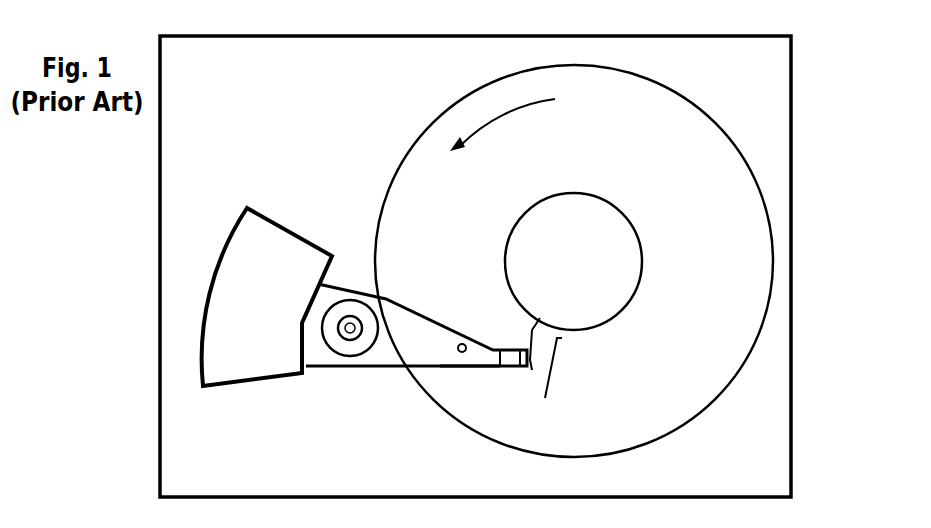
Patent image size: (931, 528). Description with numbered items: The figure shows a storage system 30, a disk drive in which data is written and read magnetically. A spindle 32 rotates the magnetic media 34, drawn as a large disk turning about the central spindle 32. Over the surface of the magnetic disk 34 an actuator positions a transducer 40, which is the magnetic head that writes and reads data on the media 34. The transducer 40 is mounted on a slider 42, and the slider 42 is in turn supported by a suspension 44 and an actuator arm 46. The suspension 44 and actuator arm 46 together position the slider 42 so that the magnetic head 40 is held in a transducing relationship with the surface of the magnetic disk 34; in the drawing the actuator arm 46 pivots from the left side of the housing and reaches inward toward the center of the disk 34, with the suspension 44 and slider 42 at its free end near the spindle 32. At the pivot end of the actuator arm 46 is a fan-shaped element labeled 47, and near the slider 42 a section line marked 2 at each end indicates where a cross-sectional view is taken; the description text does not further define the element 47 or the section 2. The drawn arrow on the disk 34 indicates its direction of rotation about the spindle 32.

The storage system 30 is at (803, 48).
The spindle 32 is at (597, 192).
The magnetic media 34 is at (703, 266).
The transducer 40 is at (532, 370).
The slider 42 is at (540, 318).
The suspension 44 is at (481, 367).
The actuator arm 46 is at (395, 301).
The voice coil motor 47 is at (283, 227).
The section line 2- 2 is at (558, 350).